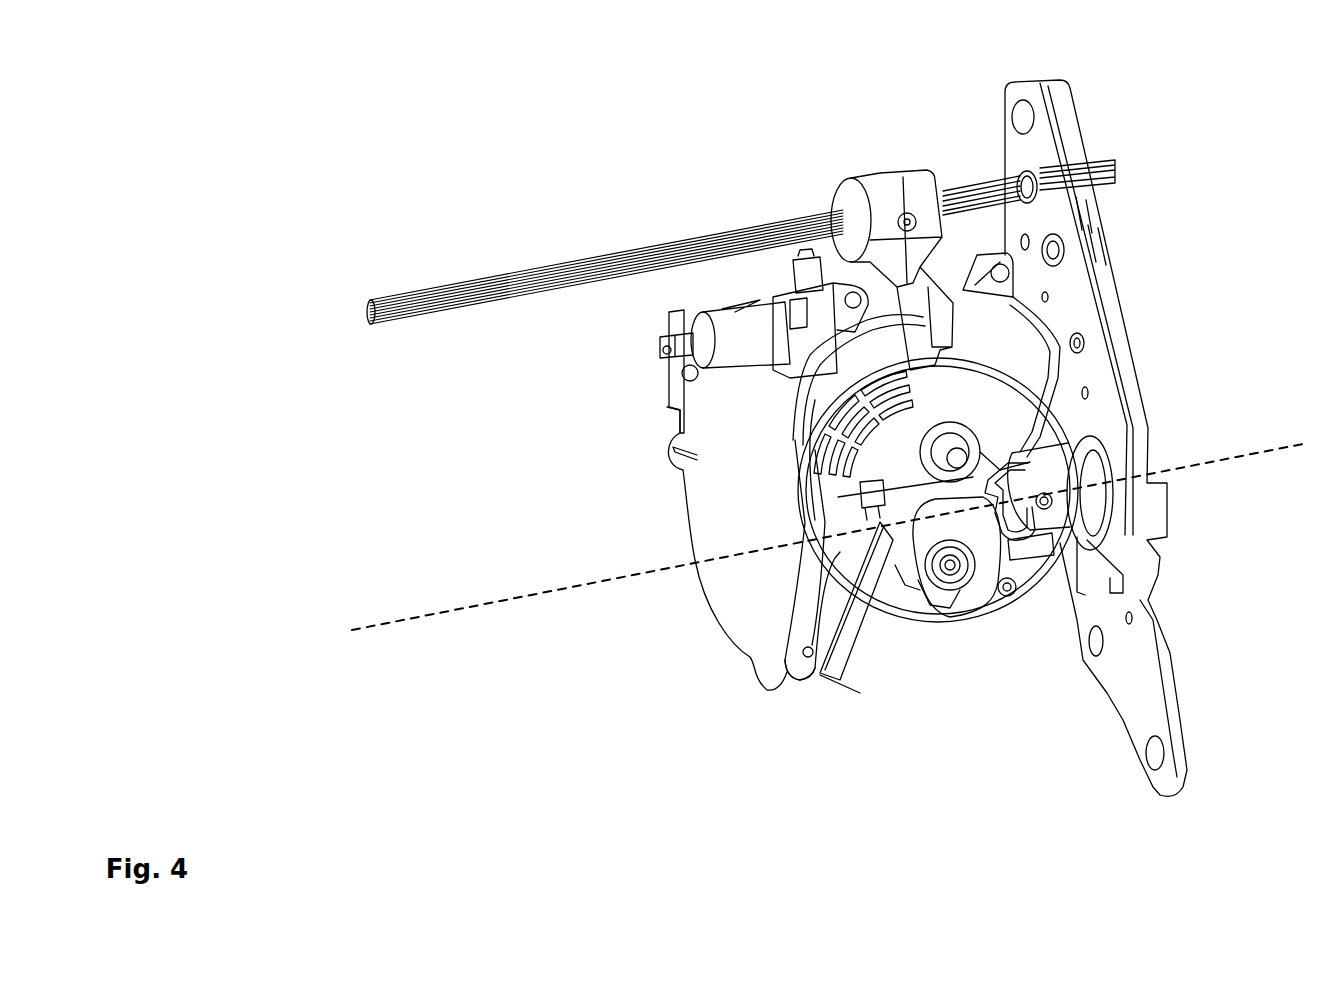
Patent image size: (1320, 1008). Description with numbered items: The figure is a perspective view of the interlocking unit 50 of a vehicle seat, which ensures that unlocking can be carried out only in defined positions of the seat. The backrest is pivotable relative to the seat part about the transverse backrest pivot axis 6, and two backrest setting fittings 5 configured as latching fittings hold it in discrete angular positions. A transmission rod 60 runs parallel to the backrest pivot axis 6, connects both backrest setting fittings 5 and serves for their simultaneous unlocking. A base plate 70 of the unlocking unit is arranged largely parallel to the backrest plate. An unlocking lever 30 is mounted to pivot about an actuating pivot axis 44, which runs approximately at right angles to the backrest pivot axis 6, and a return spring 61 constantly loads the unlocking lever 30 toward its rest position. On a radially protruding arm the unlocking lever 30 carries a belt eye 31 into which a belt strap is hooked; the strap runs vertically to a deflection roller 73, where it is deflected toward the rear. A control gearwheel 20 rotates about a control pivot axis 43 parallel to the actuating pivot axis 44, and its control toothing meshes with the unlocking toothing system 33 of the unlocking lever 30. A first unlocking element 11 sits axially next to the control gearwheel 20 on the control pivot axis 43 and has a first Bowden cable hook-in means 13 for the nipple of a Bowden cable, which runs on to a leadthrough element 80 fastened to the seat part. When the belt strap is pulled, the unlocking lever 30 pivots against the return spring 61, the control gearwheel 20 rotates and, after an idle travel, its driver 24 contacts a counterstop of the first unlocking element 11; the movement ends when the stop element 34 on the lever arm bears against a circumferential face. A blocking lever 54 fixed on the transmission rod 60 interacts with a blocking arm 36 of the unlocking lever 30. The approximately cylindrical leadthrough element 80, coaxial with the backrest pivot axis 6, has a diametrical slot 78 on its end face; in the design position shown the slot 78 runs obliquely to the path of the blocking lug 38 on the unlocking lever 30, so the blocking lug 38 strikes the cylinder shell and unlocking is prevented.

The backrest setting fitting 5 is at (1063, 303).
The backrest pivot axis 6 is at (470, 607).
The first unlocking element 11 is at (995, 541).
The first Bowden cable hook-in means 13 is at (957, 572).
The control gearwheel 20 is at (933, 603).
The driver 24 is at (920, 593).
The unlocking lever 30 is at (878, 426).
The belt eye 31 is at (810, 654).
The unlocking toothing system 33 is at (994, 488).
The stop element 34 is at (900, 537).
The blocking arm 36 is at (870, 352).
The blocking lug 38 is at (985, 472).
The control pivot axis 43 is at (943, 523).
The actuating pivot axis 44 is at (950, 454).
The interlocking unit 50 is at (297, 151).
The blocking lever 54 is at (900, 270).
The transmission rod 60 is at (442, 292).
The return spring 61 is at (860, 490).
The base plate 70 is at (725, 430).
The deflection roller 73 is at (730, 327).
The slot 78 is at (1044, 501).
The leadthrough element 80 is at (1088, 502).